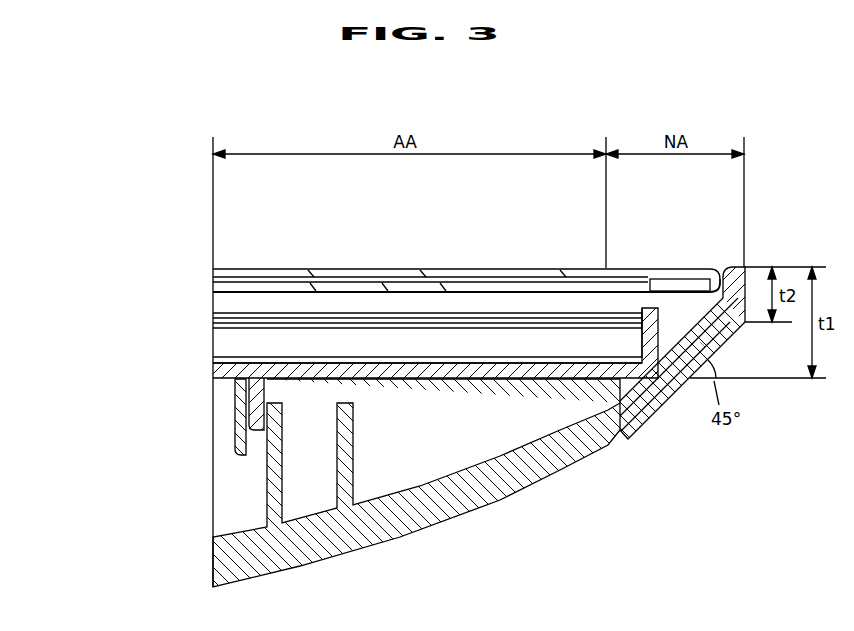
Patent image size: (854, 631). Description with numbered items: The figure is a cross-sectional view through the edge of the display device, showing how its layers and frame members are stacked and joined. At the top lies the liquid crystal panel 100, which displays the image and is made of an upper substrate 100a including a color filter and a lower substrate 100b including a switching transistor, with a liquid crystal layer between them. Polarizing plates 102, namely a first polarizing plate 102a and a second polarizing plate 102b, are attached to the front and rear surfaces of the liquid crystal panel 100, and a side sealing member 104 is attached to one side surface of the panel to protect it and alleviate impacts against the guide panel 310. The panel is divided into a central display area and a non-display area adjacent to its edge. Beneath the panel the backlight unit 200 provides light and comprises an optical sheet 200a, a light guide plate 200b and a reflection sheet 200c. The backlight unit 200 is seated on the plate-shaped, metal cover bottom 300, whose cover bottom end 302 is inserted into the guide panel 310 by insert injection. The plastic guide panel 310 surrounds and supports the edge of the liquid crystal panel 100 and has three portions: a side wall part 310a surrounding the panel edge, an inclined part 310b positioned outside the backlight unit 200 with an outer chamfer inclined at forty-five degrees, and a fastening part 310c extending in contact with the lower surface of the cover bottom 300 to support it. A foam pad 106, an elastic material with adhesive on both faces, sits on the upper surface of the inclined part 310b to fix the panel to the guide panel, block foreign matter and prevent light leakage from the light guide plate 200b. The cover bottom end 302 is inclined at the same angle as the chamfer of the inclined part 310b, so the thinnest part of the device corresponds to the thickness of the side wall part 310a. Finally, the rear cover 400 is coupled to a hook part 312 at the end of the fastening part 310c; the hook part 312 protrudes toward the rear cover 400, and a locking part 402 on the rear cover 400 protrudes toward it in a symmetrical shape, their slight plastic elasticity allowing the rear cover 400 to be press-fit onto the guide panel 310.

The liquid crystal panel 100 is at (392, 243).
The upper substrate 100a is at (415, 222).
The lower substrate 100b is at (213, 292).
The polarizing plates 102 is at (466, 222).
The first polarizing plate 102a is at (434, 269).
The second polarizing plate 102b is at (437, 197).
The side sealing member 104 is at (727, 268).
The foam pad 106 is at (681, 279).
The backlight unit 200 is at (327, 353).
The optical sheet 200a is at (213, 328).
The light guide plate 200b is at (213, 343).
The reflection sheet 200c is at (213, 360).
The cover bottom 300 is at (427, 425).
The cover bottom end 302 is at (676, 384).
The guide panel 310 is at (427, 410).
The side wall part 310a is at (735, 345).
The inclined part 310b is at (688, 382).
The fastening part 310c is at (623, 414).
The hook part 312 is at (257, 433).
The rear cover 400 is at (427, 425).
The locking part 402 is at (240, 417).